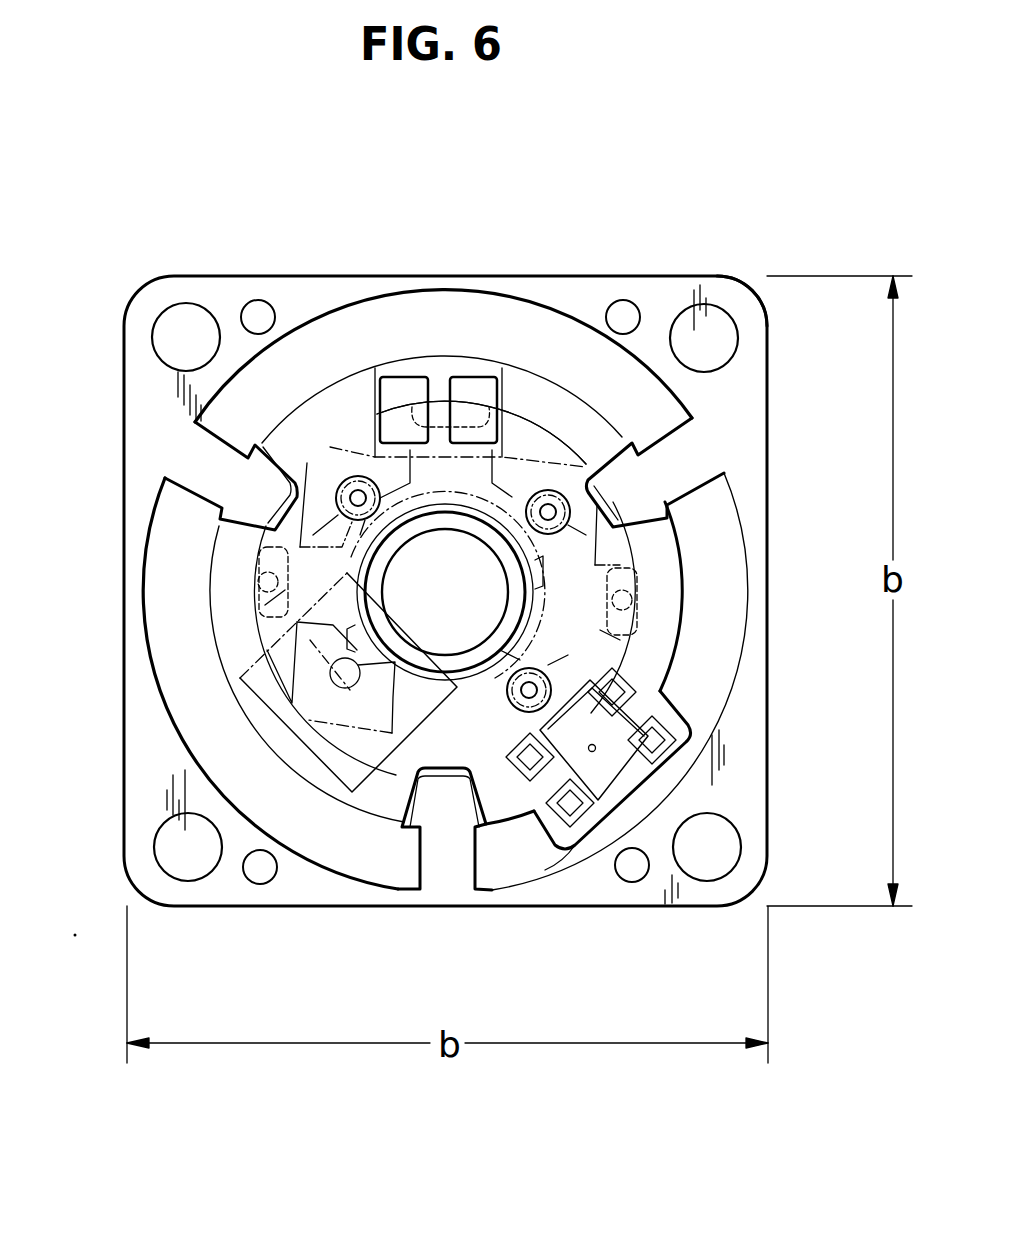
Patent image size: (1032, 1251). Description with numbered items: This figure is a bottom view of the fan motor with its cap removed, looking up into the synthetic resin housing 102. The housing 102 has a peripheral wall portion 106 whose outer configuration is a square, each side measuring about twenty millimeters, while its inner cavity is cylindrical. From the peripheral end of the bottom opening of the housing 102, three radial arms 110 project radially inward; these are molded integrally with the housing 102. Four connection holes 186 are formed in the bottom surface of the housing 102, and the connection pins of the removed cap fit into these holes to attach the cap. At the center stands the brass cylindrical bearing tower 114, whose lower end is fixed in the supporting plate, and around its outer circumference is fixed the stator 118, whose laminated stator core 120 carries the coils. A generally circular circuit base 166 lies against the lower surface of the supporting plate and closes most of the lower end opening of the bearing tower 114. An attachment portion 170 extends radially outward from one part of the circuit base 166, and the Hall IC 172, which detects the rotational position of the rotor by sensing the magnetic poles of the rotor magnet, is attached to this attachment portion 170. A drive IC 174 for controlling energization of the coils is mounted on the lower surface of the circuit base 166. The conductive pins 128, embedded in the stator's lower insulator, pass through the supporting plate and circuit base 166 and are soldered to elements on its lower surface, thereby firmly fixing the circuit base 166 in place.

The housing 102 is at (767, 329).
The peripheral wall portion 106 is at (740, 713).
The radial arms 110 is at (240, 493).
The bearing tower 114 is at (485, 528).
The stator 118 is at (563, 426).
The stator core 120 is at (345, 452).
The conductive pins 128 is at (600, 665).
The circuit base 166 is at (668, 572).
The attachment portion 170 is at (553, 832).
The Hall IC 172 is at (640, 786).
The drive IC 174 is at (253, 700).
The connection holes 186 is at (258, 300).